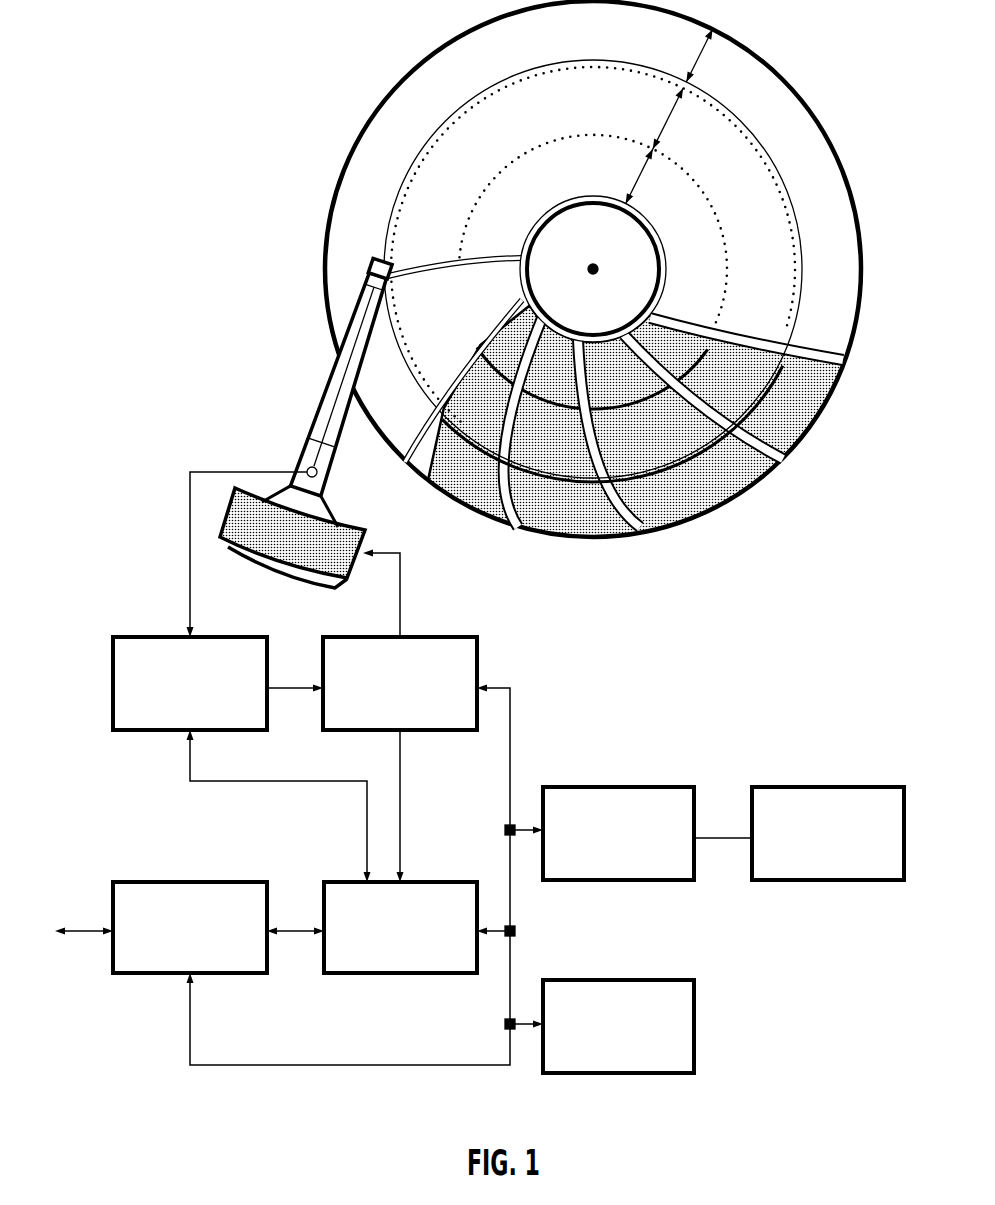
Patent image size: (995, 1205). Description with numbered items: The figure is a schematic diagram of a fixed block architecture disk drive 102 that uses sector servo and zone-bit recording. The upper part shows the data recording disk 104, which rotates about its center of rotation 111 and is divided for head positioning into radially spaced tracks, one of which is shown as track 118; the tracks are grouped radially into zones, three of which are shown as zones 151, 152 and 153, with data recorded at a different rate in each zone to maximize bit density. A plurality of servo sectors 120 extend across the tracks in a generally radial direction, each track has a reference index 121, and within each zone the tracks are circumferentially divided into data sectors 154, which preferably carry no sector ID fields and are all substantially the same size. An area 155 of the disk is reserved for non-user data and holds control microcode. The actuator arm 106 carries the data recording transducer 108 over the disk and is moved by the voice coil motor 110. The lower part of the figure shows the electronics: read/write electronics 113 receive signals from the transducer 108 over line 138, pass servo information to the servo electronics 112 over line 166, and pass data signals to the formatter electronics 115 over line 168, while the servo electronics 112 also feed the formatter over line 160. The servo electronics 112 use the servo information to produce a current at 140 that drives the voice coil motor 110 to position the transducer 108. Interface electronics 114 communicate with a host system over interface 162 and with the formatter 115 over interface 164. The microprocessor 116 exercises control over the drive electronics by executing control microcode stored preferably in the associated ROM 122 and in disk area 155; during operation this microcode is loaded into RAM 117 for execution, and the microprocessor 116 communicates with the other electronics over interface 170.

The disk drive 102 is at (326, 55).
The data recording disk 104 is at (356, 139).
The actuator arm 106 is at (330, 378).
The data recording transducer 108 is at (370, 264).
The voice coil motor 110 is at (347, 525).
The center of rotation 111 is at (601, 268).
The servo electronics 112 is at (457, 635).
The read/write electronics 113 is at (140, 635).
The interface electronics 114 is at (140, 880).
The formatter electronics 115 is at (435, 880).
The microprocessor 116 is at (650, 785).
The RAM 117 is at (645, 978).
The track 118 is at (535, 68).
The servo sectors 120 is at (800, 440).
The reference index 121 is at (848, 376).
The ROM 122 is at (855, 785).
The head signal line 138 is at (185, 518).
The current 140 is at (405, 580).
The zone 151 is at (696, 62).
The zone 152 is at (664, 121).
The zone 153 is at (632, 186).
The data sectors 154 is at (828, 398).
The disk area 155 is at (670, 270).
The servo to formatter line 160 is at (403, 830).
The interface 162 is at (80, 935).
The interface 164 is at (295, 935).
The read/write to servo line 166 is at (295, 685).
The read/write to formatter line 168 is at (365, 835).
The interface 170 is at (512, 735).